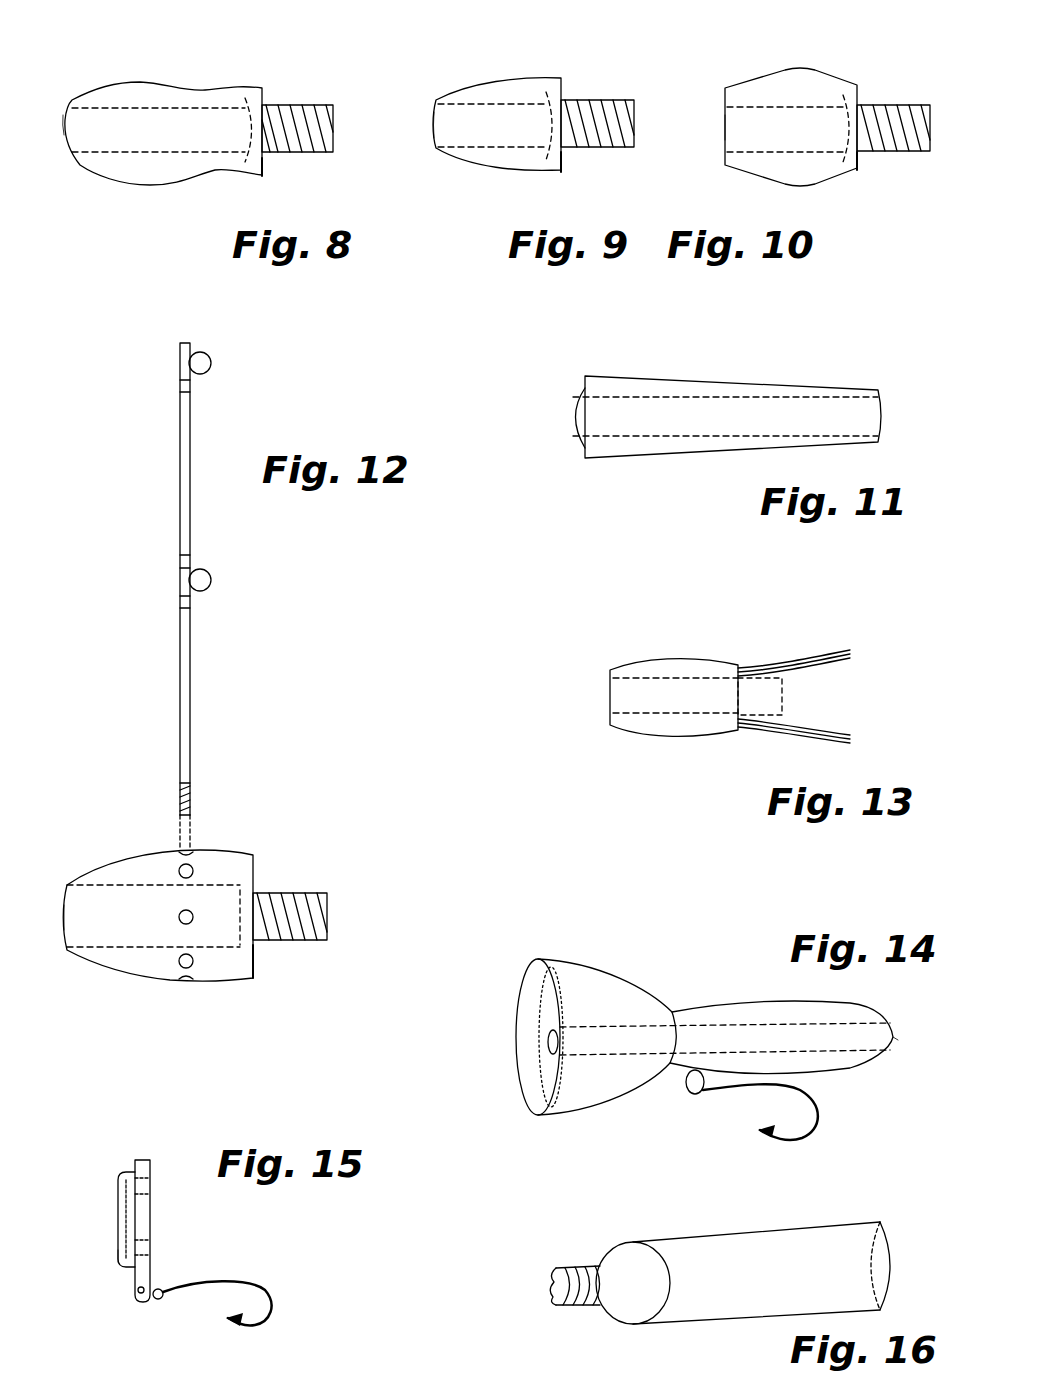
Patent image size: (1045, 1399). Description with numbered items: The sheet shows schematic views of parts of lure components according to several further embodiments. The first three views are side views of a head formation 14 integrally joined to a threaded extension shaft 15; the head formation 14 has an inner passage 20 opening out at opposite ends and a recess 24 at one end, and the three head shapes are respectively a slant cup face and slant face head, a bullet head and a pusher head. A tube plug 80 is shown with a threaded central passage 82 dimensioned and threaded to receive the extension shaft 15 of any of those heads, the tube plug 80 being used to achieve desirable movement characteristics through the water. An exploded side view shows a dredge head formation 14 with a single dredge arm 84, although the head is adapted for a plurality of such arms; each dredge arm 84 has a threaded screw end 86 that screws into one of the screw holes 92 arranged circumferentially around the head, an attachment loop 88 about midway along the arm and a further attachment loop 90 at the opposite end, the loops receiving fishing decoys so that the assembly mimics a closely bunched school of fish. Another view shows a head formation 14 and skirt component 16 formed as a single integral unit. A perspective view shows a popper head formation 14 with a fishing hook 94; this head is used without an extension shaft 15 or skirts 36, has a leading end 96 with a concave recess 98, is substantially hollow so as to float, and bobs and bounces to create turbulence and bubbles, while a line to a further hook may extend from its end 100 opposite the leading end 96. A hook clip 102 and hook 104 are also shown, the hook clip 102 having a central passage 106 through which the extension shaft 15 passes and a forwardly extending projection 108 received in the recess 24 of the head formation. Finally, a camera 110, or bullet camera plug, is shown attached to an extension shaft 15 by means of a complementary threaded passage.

In FIG. 8, the head formation 14 is at (133, 90).
In FIG. 9, the head formation 14 is at (513, 80).
In FIG. 10, the head formation 14 is at (773, 78).
In FIG. 12, the head formation 14 is at (105, 865).
In FIG. 13, the head formation 14 is at (655, 665).
In FIG. 14, the head formation 14 is at (600, 975).
In FIG. 8, the extension shaft 15 is at (300, 100).
In FIG. 9, the extension shaft 15 is at (607, 100).
In FIG. 10, the extension shaft 15 is at (903, 103).
In FIG. 12, the extension shaft 15 is at (303, 893).
In FIG. 16, the extension shaft 15 is at (572, 1268).
In FIG. 13, the skirt component 16 is at (782, 653).
In FIG. 8, the inner passage 20 is at (60, 128).
In FIG. 9, the inner passage 20 is at (431, 125).
In FIG. 10, the inner passage 20 is at (722, 130).
In FIG. 12, the inner passage 20 is at (60, 918).
In FIG. 14, the inner passage 20 is at (548, 1044).
In FIG. 8, the recess 24 is at (264, 160).
In FIG. 9, the recess 24 is at (564, 157).
In FIG. 10, the recess 24 is at (862, 158).
In FIG. 12, the recess 24 is at (258, 948).
In FIG. 13, the skirts 36 is at (833, 656).
In FIG. 11, the tube plug 80 is at (725, 380).
In FIG. 11, the threaded central passage 82 is at (563, 412).
In FIG. 12, the dredge arm 84 is at (164, 467).
In FIG. 12, the threaded screw end 86 is at (193, 800).
In FIG. 12, the attachment loop 88 is at (212, 578).
In FIG. 12, the further attachment loop 90 is at (212, 361).
In FIG. 12, the screw holes 92 is at (180, 868).
In FIG. 14, the fishing hook 94 is at (730, 1090).
In FIG. 14, the leading end 96 is at (514, 987).
In FIG. 14, the concave recess 98 is at (528, 1070).
In FIG. 14, the end 100 is at (900, 1040).
In FIG. 15, the hook clip 102 is at (123, 1143).
In FIG. 14, the hook 104 is at (760, 1112).
In FIG. 15, the hook 104 is at (240, 1280).
In FIG. 15, the central passage 106 is at (114, 1215).
In FIG. 15, the forwardly extending projection 108 is at (125, 1263).
In FIG. 16, the camera 110 is at (718, 1238).